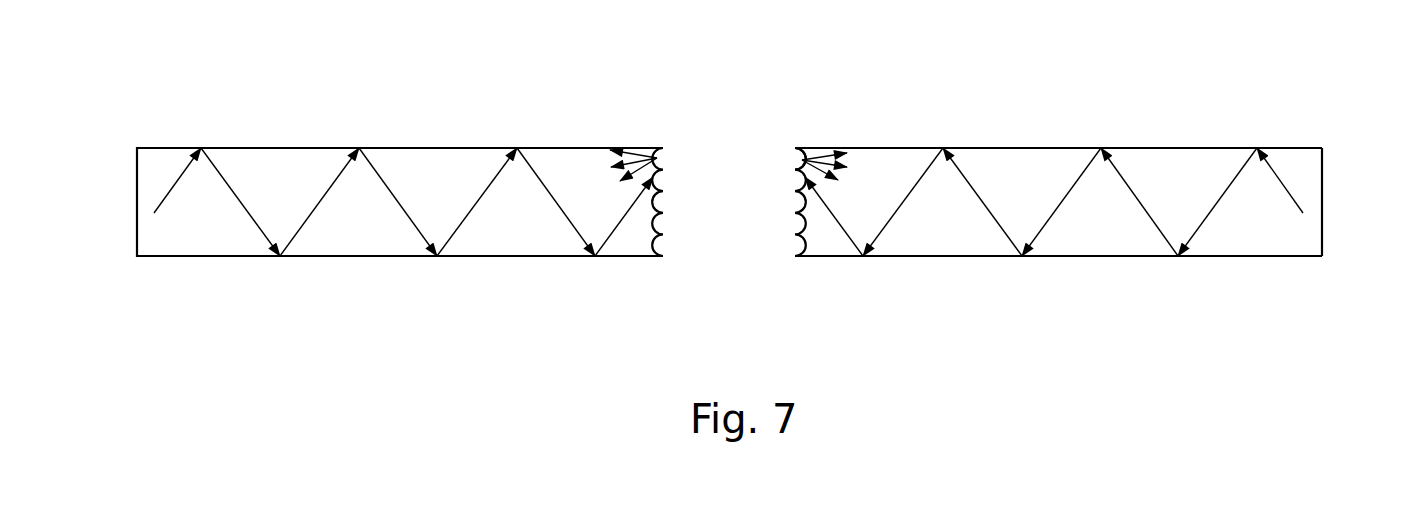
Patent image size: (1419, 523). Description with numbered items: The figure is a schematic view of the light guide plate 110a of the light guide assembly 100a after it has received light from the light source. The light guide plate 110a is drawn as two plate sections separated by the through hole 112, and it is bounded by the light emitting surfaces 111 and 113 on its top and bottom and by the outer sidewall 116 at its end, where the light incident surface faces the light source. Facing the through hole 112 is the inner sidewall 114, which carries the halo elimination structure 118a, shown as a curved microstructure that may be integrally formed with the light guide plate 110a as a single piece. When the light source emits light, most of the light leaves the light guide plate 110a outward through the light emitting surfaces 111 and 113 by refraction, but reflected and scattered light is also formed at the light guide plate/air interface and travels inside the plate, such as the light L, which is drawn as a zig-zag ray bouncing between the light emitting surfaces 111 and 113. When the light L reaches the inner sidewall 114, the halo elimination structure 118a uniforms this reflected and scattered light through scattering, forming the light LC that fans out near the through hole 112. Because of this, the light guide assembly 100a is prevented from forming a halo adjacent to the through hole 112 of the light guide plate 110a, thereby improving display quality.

The light guide assembly 100a is at (178, 52).
The light guide plate 110a is at (1012, 163).
The light emitting surface 111 is at (1133, 146).
The light emitting surface 113 is at (1134, 258).
The outer sidewall 116 is at (1325, 200).
The through hole 112 is at (711, 169).
The inner sidewall 114 is at (797, 219).
The halo elimination structure 118a is at (797, 164).
The light Lc LC is at (817, 156).
The light L is at (850, 237).